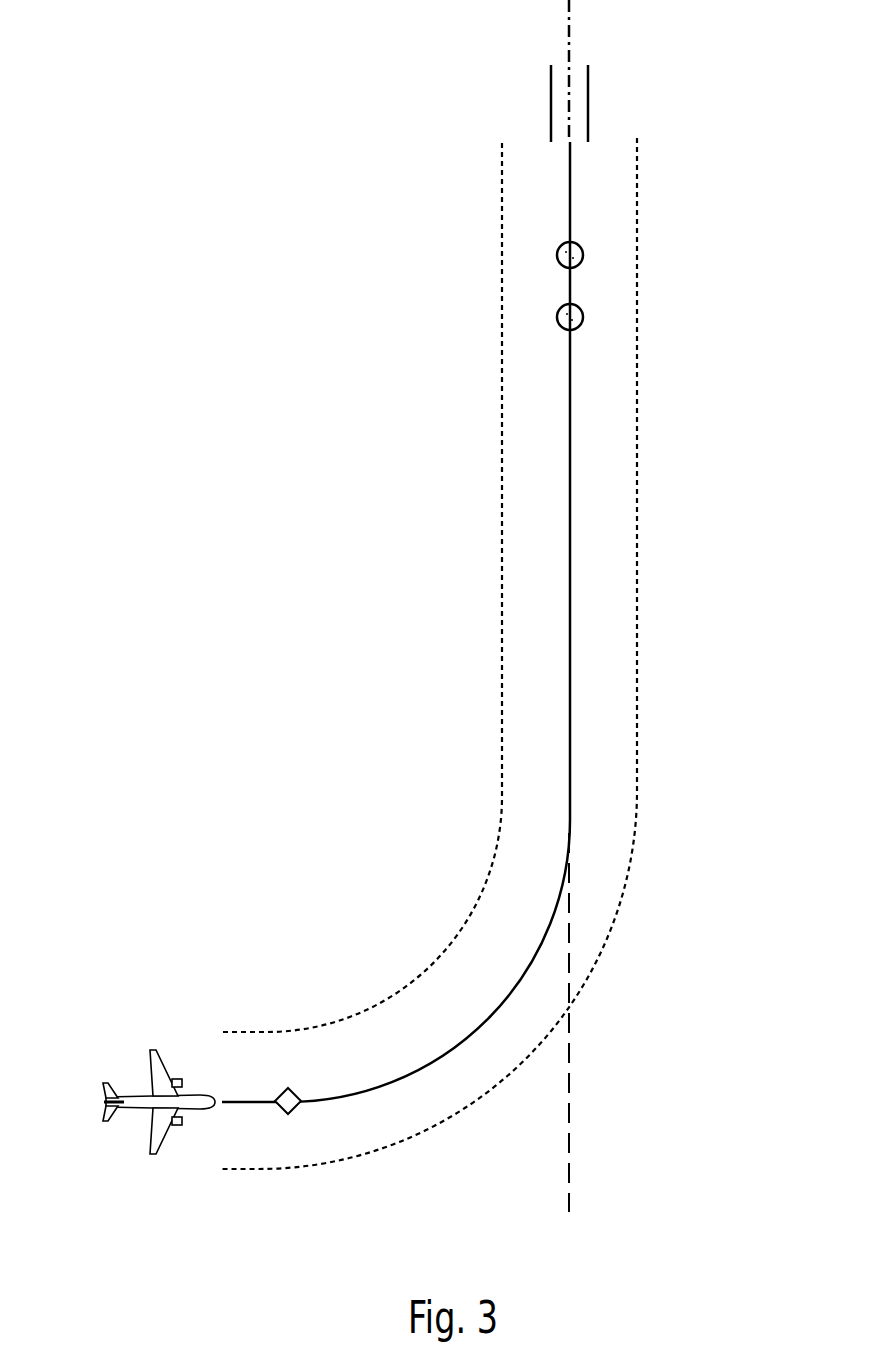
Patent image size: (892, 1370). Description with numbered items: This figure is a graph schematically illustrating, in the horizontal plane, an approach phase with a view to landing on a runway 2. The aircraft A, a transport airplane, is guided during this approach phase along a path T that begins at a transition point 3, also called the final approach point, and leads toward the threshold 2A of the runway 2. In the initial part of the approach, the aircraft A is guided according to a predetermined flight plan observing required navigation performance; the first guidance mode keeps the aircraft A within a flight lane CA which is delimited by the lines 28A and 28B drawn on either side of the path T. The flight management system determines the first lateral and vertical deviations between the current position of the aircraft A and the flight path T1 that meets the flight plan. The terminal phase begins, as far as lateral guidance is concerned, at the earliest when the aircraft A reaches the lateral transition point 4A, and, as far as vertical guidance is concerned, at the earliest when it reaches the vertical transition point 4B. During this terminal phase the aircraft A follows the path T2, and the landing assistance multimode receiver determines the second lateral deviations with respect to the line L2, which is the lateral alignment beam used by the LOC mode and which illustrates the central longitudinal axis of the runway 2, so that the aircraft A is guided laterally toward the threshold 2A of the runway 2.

The line of approach L2 is at (570, 32).
The runway 2 is at (548, 108).
The runway threshold 2A is at (538, 137).
The path followed during the terminal phase T2 is at (582, 187).
The flight path that meets the flight plan T1 is at (585, 796).
The lateral transition point 4A is at (607, 249).
The vertical transition point 4B is at (607, 316).
The line delimiting the flight lane 28A is at (502, 668).
The line delimiting the flight lane 28B is at (638, 687).
The flight lane CA is at (490, 904).
The transition point 3 is at (284, 1072).
The aircraft A is at (138, 1095).
The path T is at (388, 1094).